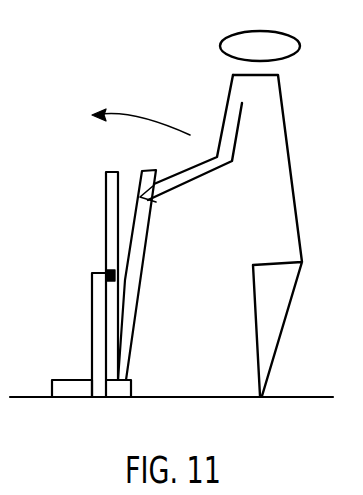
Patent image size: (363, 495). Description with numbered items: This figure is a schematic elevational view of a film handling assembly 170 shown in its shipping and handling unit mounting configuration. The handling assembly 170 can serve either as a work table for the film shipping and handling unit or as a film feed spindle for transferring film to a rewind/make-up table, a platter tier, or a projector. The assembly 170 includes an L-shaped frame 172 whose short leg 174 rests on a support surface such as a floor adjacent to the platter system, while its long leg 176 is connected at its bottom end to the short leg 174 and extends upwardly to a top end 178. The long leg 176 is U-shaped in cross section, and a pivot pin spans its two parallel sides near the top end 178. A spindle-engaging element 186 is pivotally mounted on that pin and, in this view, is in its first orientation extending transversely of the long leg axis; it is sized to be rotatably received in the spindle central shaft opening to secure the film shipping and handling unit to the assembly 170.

The handling assembly 170 is at (78, 281).
The L-shaped frame 172 is at (92, 326).
The short leg 174 is at (72, 390).
The long leg 176 is at (95, 297).
The top end 178 is at (93, 273).
The spindle-engaging element 186 is at (106, 273).